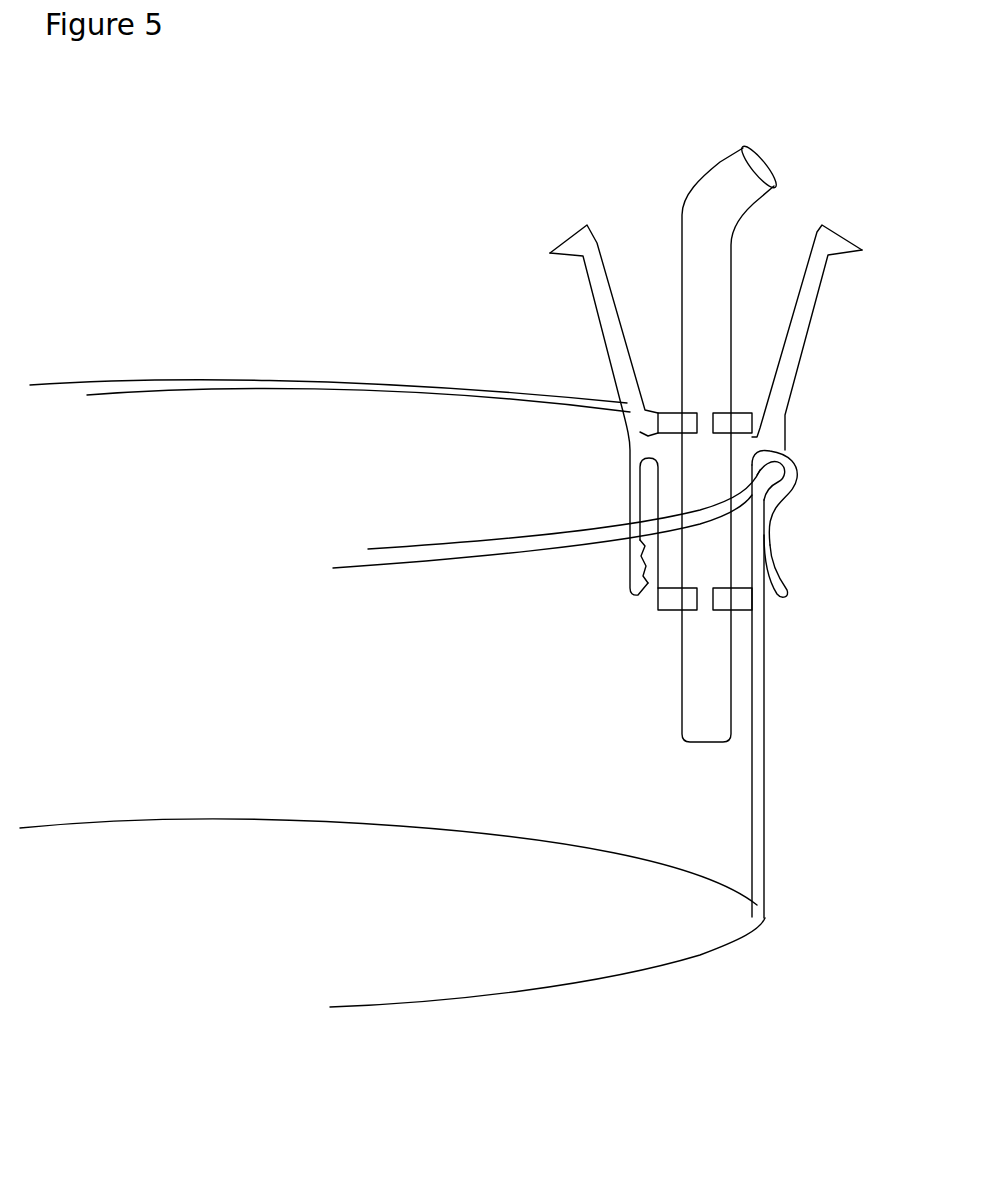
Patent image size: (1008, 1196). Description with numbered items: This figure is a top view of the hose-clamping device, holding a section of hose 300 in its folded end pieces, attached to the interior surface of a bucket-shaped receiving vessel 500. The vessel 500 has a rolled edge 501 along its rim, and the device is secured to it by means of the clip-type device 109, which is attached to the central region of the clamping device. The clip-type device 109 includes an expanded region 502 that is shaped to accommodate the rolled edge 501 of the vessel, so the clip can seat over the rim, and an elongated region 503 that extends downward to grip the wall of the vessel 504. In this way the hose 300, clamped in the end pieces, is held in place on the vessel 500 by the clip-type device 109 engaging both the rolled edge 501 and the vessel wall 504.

The hose 300 is at (717, 213).
The bucket-shaped receiving vessel 500 is at (290, 368).
The rolled edge 501 is at (765, 473).
The expanded region 502 is at (777, 478).
The elongated region 503 is at (767, 532).
The clip-type device 109 is at (778, 580).
The wall of the vessel 504 is at (758, 772).